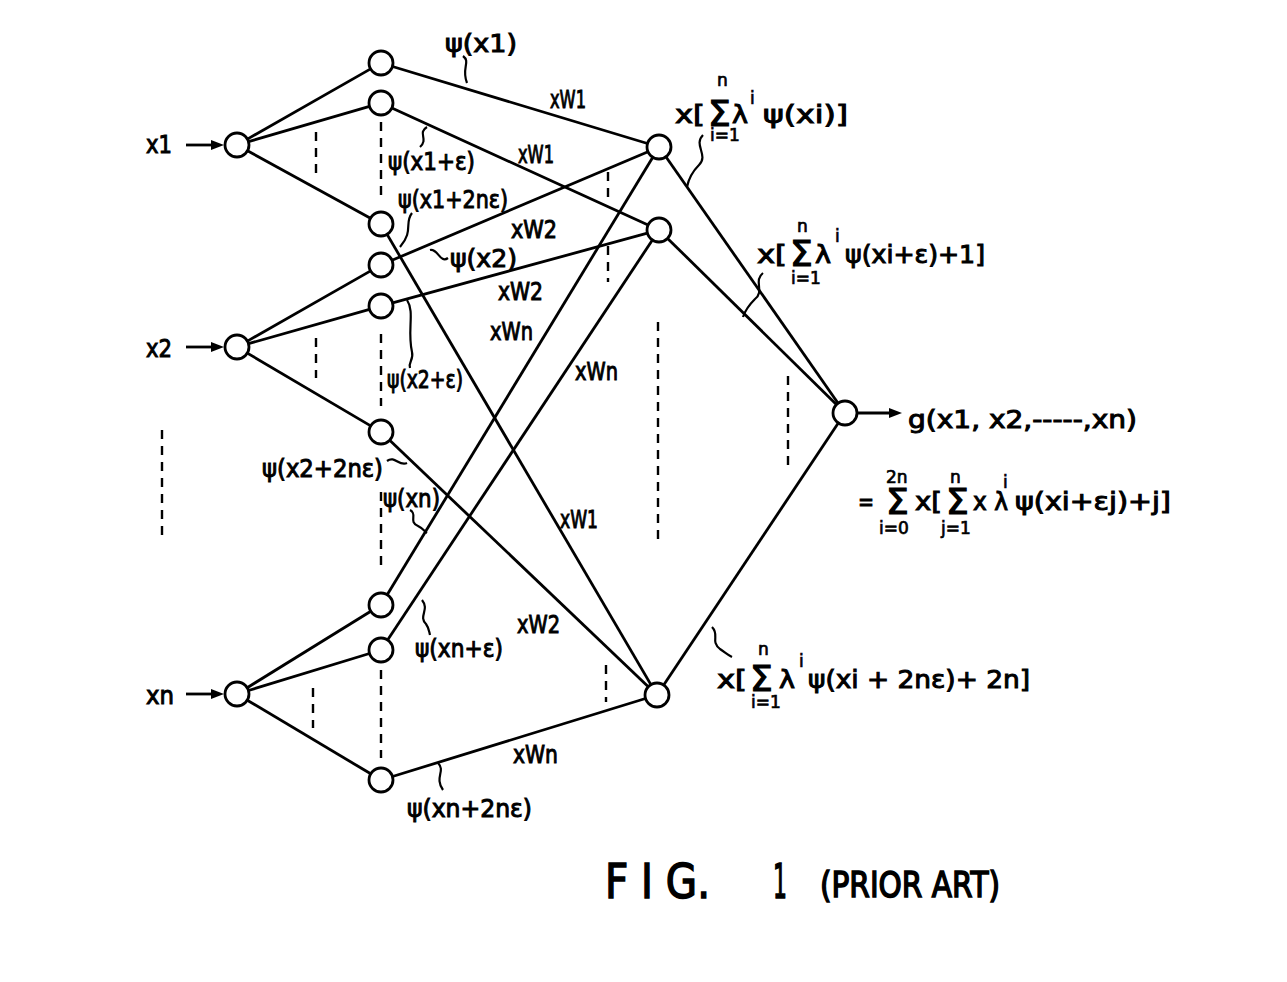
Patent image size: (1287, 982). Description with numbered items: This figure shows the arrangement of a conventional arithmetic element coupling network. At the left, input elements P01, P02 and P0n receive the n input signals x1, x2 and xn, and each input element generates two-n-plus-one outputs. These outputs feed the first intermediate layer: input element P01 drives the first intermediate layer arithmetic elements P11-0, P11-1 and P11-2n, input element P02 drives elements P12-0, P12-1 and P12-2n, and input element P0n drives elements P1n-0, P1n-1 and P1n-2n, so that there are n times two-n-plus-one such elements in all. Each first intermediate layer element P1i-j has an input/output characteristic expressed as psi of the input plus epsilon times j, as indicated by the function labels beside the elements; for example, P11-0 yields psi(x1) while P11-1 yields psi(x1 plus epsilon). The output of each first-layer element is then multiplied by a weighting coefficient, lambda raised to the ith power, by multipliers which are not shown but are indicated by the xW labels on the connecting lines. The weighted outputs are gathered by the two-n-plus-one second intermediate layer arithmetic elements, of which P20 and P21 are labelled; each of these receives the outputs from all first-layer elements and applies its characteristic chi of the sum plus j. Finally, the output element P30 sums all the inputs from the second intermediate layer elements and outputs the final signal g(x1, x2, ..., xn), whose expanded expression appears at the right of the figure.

The input element P01 is at (237, 133).
The input element P02 is at (235, 335).
The input element P0n is at (237, 682).
The first intermediate layer arithmetic element P11-0 is at (370, 56).
The first intermediate layer arithmetic element P11-1 is at (393, 100).
The first intermediate layer arithmetic element P11-2n is at (368, 226).
The first intermediate layer arithmetic element P12-0 is at (368, 264).
The first intermediate layer arithmetic element P12-1 is at (368, 303).
The first intermediate layer arithmetic element P12-2n is at (369, 433).
The first intermediate layer arithmetic element P1n-0 is at (371, 598).
The first intermediate layer arithmetic element P1n-1 is at (369, 640).
The first intermediate layer arithmetic element P1n-2n is at (384, 768).
The second intermediate layer arithmetic element P20 is at (659, 160).
The second intermediate layer arithmetic element P21 is at (659, 243).
The output element P30 is at (845, 400).